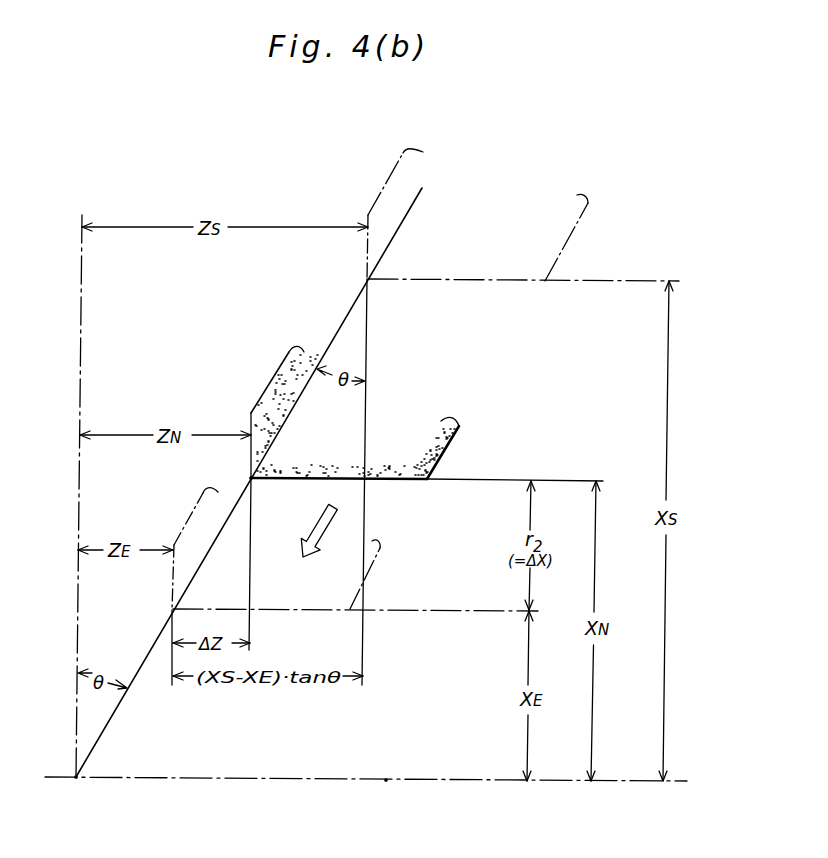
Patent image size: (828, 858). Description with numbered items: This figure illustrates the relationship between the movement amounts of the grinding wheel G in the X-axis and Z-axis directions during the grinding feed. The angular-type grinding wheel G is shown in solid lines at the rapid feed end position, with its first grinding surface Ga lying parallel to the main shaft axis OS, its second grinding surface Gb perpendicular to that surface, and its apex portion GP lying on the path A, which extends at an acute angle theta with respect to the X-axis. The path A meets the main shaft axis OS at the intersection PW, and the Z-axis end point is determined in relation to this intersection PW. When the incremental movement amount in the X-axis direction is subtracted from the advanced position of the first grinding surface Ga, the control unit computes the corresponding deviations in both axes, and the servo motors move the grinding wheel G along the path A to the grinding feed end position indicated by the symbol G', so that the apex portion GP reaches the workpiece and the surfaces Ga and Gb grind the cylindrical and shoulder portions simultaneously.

The grinding wheel G is at (276, 412).
The second grinding surface Gb is at (251, 453).
The first grinding surface Ga is at (413, 481).
The apex portion GP is at (252, 481).
The grinding feed end position G' is at (184, 549).
The path A is at (210, 548).
The intersection of path A and main shaft axis PW is at (76, 780).
The main shaft axis OS is at (386, 782).